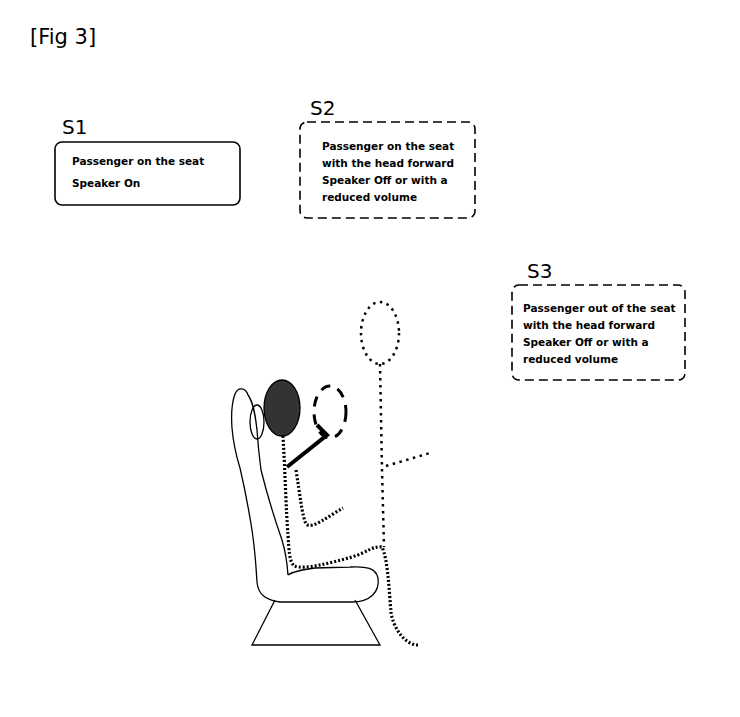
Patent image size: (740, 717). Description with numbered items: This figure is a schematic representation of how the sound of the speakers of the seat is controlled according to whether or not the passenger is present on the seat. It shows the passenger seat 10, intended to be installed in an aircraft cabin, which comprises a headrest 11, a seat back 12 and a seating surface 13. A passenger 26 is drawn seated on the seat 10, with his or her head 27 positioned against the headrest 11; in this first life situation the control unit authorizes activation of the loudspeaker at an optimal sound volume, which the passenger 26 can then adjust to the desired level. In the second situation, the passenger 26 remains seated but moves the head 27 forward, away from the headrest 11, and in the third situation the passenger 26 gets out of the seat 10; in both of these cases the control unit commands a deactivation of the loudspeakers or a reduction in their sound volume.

The passenger seat 10 is at (192, 358).
The headrest 11 is at (237, 405).
The seat back 12 is at (240, 456).
The seating surface 13 is at (315, 588).
The passenger 26 is at (288, 483).
The head 27 is at (276, 382).